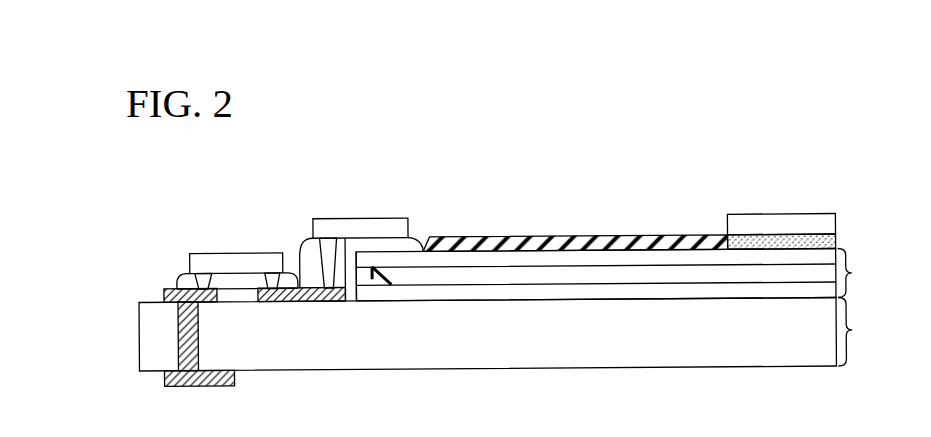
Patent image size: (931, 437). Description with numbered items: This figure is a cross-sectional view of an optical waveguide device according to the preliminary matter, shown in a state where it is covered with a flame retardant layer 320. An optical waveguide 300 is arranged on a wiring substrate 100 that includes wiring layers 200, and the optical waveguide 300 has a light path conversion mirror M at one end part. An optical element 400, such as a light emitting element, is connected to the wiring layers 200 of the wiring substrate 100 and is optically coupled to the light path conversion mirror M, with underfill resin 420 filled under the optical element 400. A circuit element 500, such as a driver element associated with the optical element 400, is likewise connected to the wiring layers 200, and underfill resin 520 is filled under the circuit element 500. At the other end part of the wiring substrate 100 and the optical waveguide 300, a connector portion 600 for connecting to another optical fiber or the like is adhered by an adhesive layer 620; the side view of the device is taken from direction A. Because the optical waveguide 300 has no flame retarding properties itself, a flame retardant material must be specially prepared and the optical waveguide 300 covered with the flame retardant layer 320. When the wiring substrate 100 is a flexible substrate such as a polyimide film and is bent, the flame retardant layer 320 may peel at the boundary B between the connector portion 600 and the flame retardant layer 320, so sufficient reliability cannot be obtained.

The wiring substrate 100 is at (521, 334).
The wiring layers 200 is at (163, 298).
The optical waveguide 300 is at (629, 274).
The flame retardant layer 320 is at (588, 244).
The optical element 400 is at (350, 227).
The underfill resin 420 is at (368, 250).
The circuit element 500 is at (225, 261).
The underfill resin 520 is at (242, 281).
The connector portion 600 is at (772, 226).
The adhesive layer 620 is at (790, 242).
The light path conversion mirror M is at (391, 268).
The boundary B is at (721, 220).
The direction A is at (886, 306).